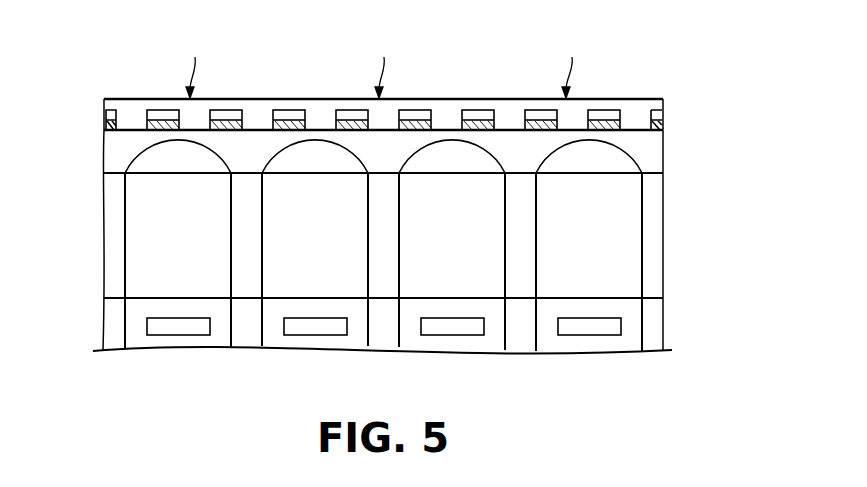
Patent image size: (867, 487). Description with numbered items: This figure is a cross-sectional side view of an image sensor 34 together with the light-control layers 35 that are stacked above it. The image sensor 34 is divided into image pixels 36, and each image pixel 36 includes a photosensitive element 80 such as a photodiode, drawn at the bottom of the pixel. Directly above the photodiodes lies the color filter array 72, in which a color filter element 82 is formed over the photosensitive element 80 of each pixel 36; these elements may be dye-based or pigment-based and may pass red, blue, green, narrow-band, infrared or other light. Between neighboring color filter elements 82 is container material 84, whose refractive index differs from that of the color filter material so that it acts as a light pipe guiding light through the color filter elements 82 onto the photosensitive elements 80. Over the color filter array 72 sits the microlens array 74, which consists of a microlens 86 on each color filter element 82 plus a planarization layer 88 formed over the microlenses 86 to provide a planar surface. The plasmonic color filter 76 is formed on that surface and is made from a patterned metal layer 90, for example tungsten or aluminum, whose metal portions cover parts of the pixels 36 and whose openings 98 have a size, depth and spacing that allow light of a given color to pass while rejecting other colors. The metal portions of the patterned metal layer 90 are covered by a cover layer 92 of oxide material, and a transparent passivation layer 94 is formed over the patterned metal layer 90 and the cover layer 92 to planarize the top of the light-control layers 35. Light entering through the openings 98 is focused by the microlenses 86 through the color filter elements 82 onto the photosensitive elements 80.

The light-control layers 35 is at (47, 98).
The image sensor 34 is at (103, 323).
The image pixel 36 is at (137, 334).
The color filter array 72 is at (718, 172).
The microlens array 74 is at (718, 128).
The plasmonic color filter 76 is at (718, 98).
The photosensitive element 80 is at (180, 327).
The color filter element 82 is at (167, 244).
The container material 84 is at (243, 213).
The microlens 86 is at (292, 157).
The planarization layer 88 is at (103, 153).
The patterned metal layer 90 is at (268, 127).
The cover layer 92 is at (308, 116).
The passivation layer 94 is at (103, 105).
The opening 98 is at (382, 66).